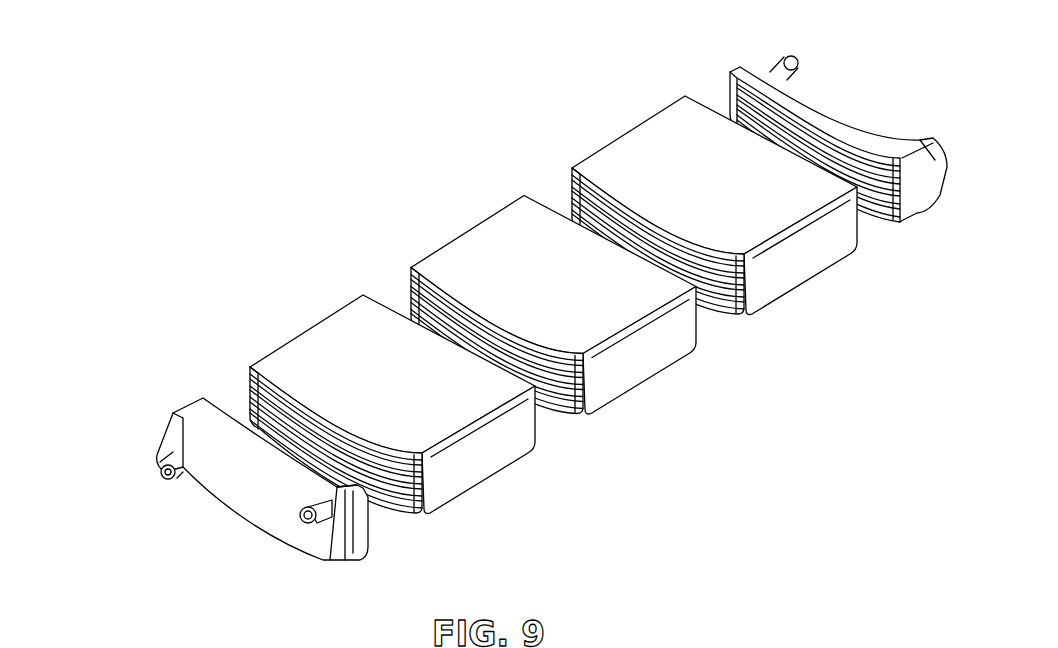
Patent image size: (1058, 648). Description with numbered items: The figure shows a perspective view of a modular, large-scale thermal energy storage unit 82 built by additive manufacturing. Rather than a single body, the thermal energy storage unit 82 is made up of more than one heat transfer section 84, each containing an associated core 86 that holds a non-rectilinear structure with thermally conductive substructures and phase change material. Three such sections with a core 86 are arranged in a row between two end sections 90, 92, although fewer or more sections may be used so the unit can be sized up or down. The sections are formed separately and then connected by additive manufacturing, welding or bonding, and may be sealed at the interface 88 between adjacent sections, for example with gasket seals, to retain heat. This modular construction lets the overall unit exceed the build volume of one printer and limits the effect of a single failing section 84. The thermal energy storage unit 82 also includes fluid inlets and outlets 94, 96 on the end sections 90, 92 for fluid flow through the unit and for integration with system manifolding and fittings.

The thermal energy storage unit 82 is at (142, 406).
The heat transfer section 84 is at (288, 322).
The core 86 is at (256, 408).
The interface 88 is at (382, 302).
The end section 90 is at (238, 499).
The end section 92 is at (745, 62).
The fluid inlet and outlet 94 is at (163, 479).
The fluid inlet and outlet 96 is at (326, 514).